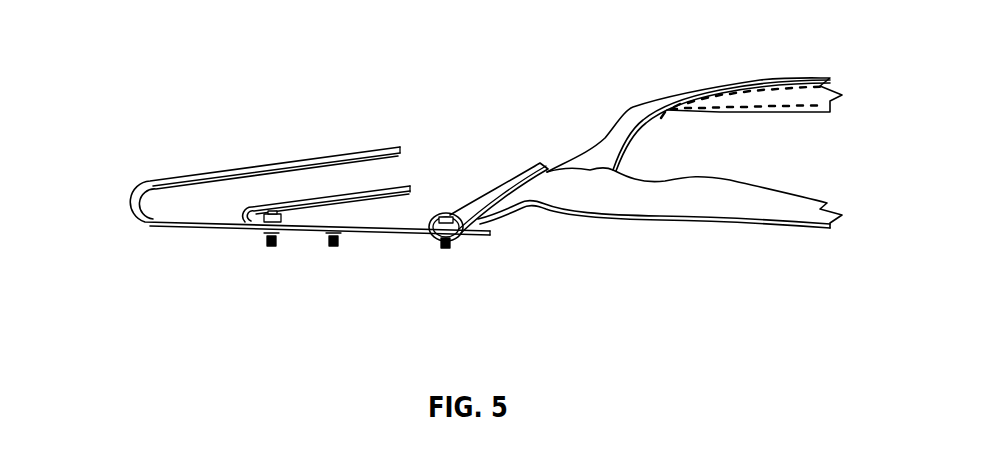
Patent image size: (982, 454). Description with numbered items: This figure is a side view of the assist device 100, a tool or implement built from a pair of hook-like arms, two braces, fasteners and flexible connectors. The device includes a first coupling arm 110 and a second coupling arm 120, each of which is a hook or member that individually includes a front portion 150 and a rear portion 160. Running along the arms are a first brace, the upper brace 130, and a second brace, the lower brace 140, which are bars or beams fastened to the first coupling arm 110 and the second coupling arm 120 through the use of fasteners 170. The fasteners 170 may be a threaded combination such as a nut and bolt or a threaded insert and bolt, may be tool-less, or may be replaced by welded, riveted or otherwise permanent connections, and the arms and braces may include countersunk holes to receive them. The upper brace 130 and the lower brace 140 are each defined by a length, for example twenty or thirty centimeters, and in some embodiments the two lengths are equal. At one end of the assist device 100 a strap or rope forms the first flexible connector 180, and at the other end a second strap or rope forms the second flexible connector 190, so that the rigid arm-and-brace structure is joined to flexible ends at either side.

The assist device 100 is at (135, 127).
The first coupling arm 110 is at (426, 187).
The second coupling arm 120 is at (205, 156).
The upper brace 130 is at (253, 232).
The lower brace 140 is at (463, 235).
The front portion 150 is at (248, 164).
The rear portion 160 is at (163, 228).
The fasteners 170 is at (273, 248).
The first flexible connector 180 is at (658, 208).
The second flexible connector 190 is at (762, 95).